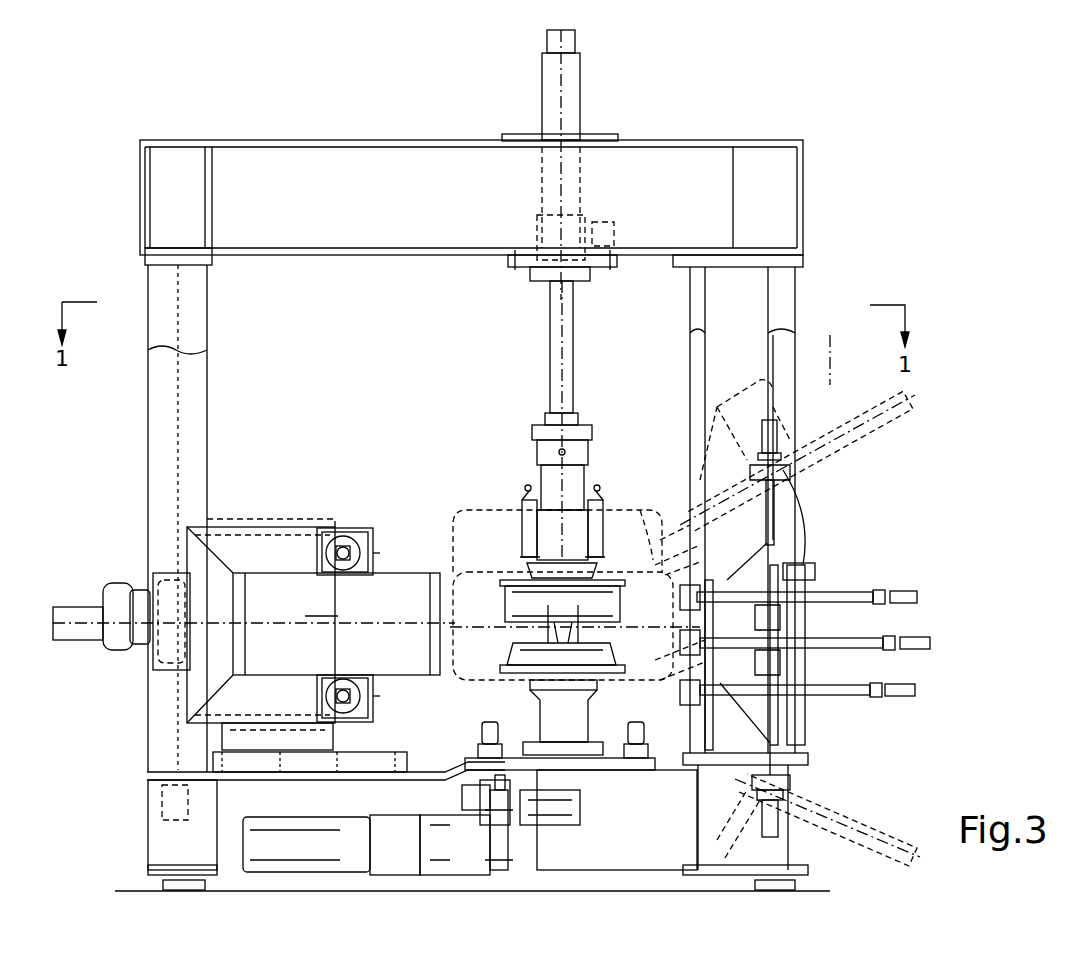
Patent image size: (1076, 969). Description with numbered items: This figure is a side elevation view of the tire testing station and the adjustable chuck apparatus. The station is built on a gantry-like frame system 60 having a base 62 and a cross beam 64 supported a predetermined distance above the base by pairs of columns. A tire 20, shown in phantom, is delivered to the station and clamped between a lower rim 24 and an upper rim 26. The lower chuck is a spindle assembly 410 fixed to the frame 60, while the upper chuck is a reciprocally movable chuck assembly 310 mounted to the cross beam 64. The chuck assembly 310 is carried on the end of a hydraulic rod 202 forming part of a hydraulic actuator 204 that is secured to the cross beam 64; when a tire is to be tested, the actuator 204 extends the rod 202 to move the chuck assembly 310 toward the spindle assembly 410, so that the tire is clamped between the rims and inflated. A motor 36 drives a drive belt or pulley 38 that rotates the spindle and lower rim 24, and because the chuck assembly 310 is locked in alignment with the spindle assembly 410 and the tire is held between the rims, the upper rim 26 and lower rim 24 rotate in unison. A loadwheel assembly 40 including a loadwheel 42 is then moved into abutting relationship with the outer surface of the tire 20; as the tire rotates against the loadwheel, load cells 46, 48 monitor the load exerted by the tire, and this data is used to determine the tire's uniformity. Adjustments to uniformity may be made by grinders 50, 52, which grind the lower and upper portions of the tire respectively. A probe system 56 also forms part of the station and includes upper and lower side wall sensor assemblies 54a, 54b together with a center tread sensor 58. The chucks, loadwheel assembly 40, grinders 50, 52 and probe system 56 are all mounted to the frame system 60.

The tire 20 is at (642, 512).
The lower rim 24 is at (506, 662).
The upper rim 26 is at (506, 604).
The motor 36 is at (474, 806).
The drive belt or pulley 38 is at (540, 806).
The loadwheel assembly 40 is at (257, 597).
The loadwheel 42 is at (254, 621).
The load cell 46 is at (345, 702).
The load cell 48 is at (350, 527).
The grinder 50 is at (845, 800).
The grinder 52 is at (846, 418).
The upper side wall sensor assembly 54a is at (894, 592).
The lower side wall sensor assembly 54b is at (900, 700).
The probe system 56 is at (851, 612).
The center tread sensor 58 is at (925, 650).
The frame system 60 is at (525, 414).
The base 62 is at (517, 906).
The cross beam 64 is at (303, 134).
The hydraulic rod 202 is at (566, 350).
The hydraulic actuator 204 is at (585, 100).
The chuck assembly 310 is at (612, 470).
The spindle assembly 410 is at (596, 722).